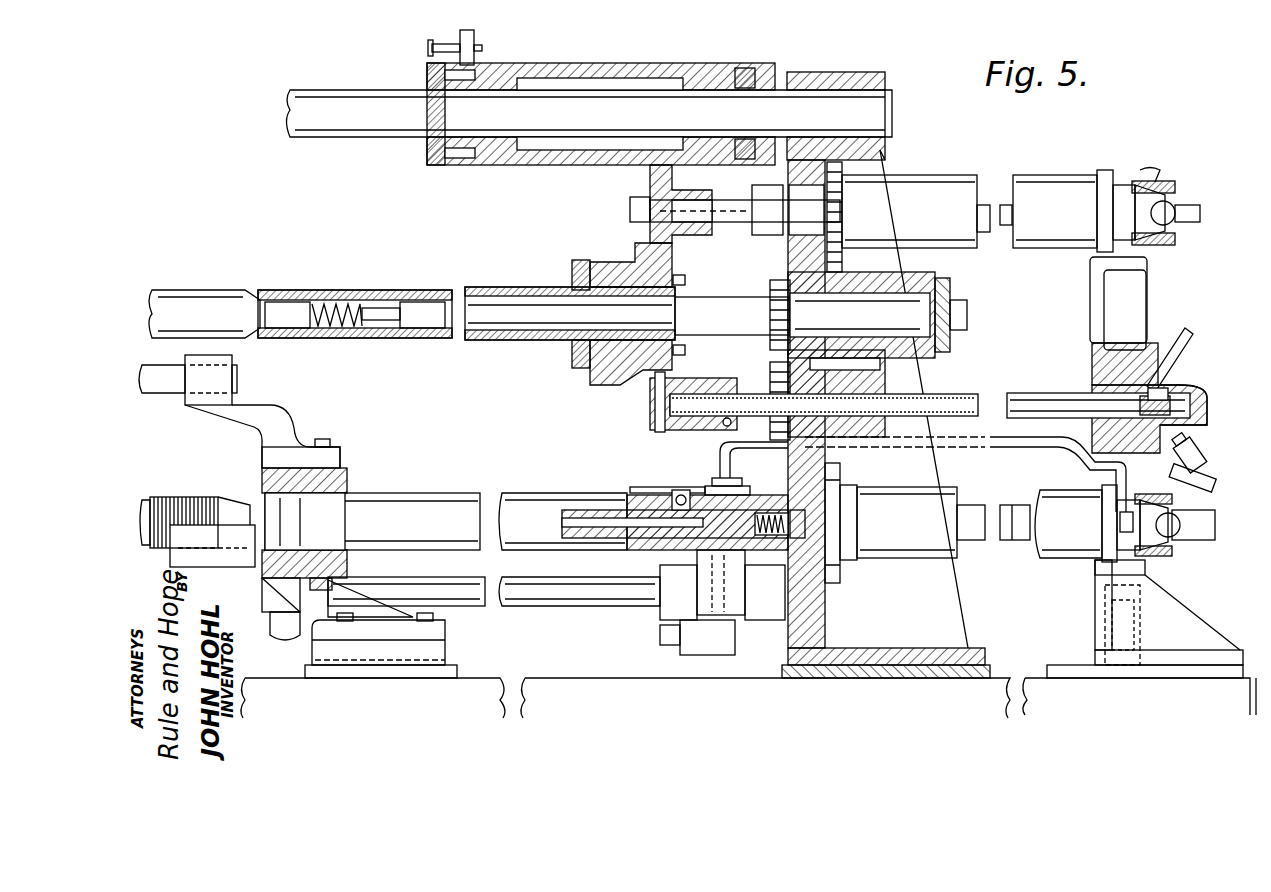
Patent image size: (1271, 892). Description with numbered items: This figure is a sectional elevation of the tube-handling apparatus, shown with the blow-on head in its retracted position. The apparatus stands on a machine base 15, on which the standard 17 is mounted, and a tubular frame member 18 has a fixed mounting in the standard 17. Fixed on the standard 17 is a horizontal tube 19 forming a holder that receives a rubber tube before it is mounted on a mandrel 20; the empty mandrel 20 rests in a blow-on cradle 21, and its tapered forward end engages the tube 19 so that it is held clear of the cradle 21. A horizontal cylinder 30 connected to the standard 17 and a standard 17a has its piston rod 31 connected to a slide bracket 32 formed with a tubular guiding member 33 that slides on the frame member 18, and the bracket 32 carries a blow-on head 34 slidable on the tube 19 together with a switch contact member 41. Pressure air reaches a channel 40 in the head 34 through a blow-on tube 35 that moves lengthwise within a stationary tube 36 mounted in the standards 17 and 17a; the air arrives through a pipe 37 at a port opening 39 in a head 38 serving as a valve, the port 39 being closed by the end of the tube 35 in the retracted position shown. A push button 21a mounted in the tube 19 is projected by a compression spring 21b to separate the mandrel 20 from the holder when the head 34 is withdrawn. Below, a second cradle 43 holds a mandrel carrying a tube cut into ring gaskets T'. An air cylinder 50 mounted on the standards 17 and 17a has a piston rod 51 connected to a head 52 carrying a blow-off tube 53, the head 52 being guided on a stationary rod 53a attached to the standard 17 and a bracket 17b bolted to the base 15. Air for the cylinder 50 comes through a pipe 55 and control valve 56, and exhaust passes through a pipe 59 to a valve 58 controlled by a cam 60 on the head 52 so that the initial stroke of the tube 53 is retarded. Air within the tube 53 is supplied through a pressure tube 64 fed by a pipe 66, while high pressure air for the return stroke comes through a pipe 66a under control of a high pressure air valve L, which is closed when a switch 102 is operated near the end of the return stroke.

The machine base 15 is at (580, 678).
The standard 17 is at (878, 58).
The standard 17a is at (1092, 296).
The bracket 17b is at (425, 640).
The tubular frame member 18 is at (342, 100).
The horizontal tube 19 is at (430, 270).
The mandrel 20 is at (218, 272).
The blow-on cradle 21 is at (175, 352).
The push button 21a is at (287, 305).
The compression spring 21b is at (335, 300).
The horizontal cylinder 30 is at (1078, 162).
The piston rod 31 is at (820, 213).
The slide bracket 32 is at (652, 170).
The tubular guiding member 33 is at (645, 50).
The blow-on head 34 is at (612, 273).
The blow-on tube 35 is at (975, 396).
The stationary tube 36 is at (938, 393).
The pipe 37 is at (1172, 338).
The head 38 is at (1195, 388).
The port opening 39 is at (1170, 385).
The channel 40 is at (628, 352).
The switch contact member 41 is at (430, 58).
The second cradle 43 is at (240, 560).
The air cylinder 50 is at (1075, 478).
The piston rod 51 is at (815, 522).
The head 52 is at (758, 502).
The blow-off tube 53 is at (540, 494).
The stationary rod 53a is at (632, 600).
The pipe 55 is at (1205, 525).
The control valve 56 is at (1181, 527).
The valve 58 is at (735, 484).
The pipe 59 is at (975, 440).
The cam 60 is at (674, 473).
The pressure tube 64 is at (1012, 505).
The pipe 66 is at (1200, 447).
The pipe 66a is at (1197, 470).
The switch 102 is at (712, 645).
The high pressure air valve L is at (1110, 626).
The ring gaskets T' is at (470, 399).